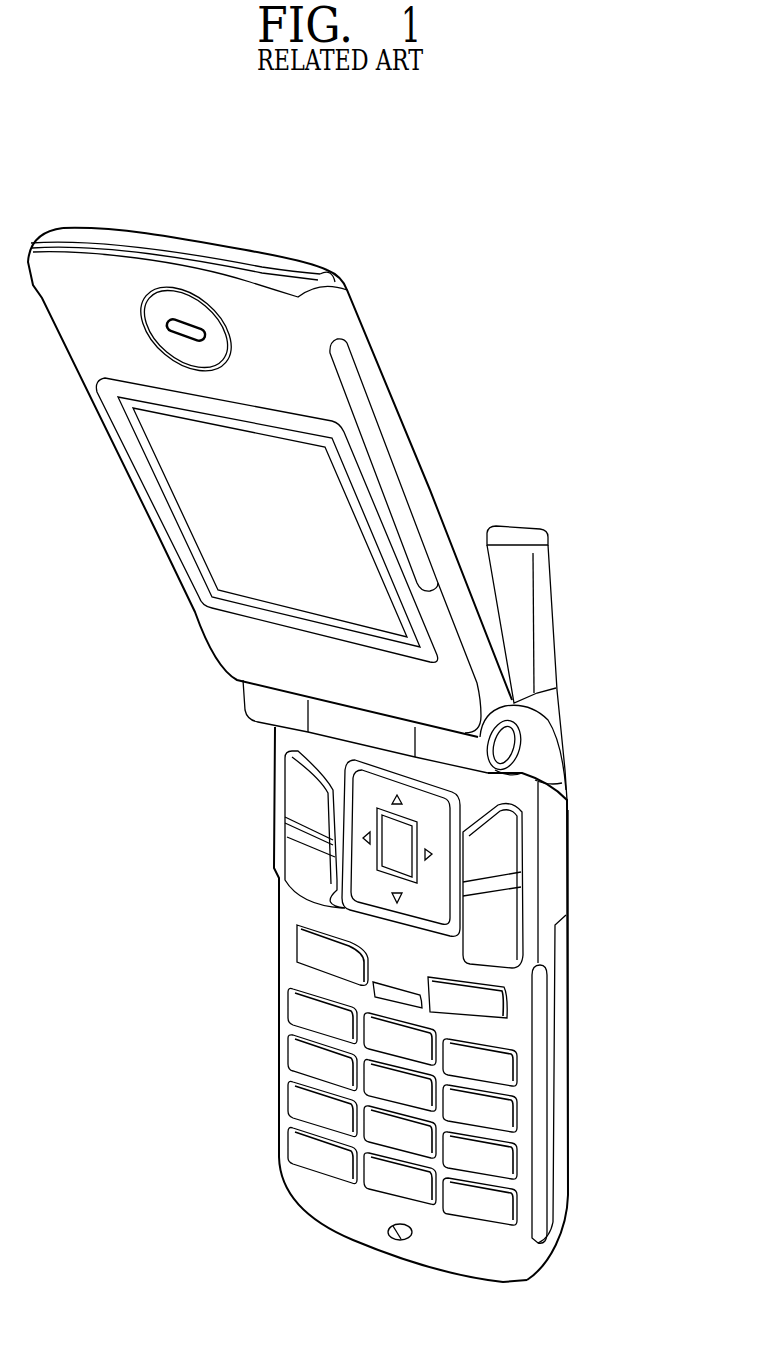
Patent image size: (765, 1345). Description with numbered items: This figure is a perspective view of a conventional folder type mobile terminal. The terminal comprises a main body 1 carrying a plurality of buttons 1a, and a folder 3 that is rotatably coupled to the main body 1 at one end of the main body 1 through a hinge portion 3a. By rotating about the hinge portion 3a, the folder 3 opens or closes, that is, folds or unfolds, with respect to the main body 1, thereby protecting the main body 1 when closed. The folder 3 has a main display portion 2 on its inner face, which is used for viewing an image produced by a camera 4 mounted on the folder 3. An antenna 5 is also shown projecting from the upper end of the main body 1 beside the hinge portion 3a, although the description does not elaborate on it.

The mobile communication terminal (folder type) 1 is at (255, 946).
The key buttons 1a is at (297, 1050).
The display (LCD) 2 is at (212, 545).
The folder (upper housing) 3 is at (412, 372).
The hinge 3a is at (536, 740).
The battery 4 is at (560, 1053).
The antenna 5 is at (545, 612).